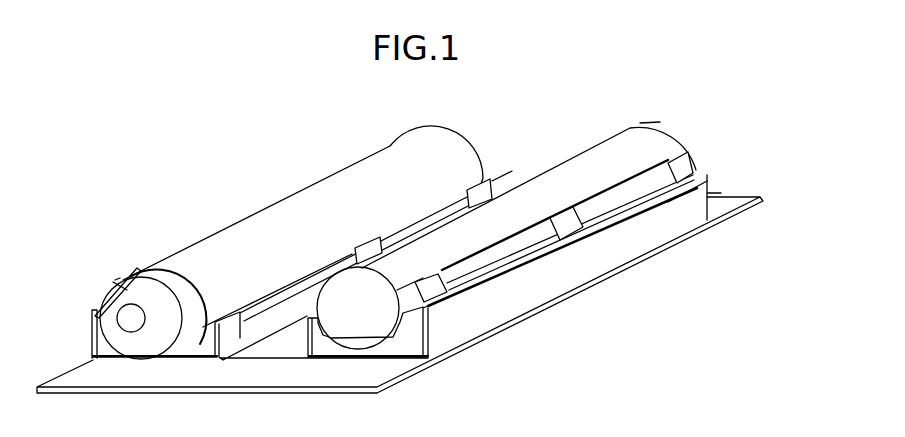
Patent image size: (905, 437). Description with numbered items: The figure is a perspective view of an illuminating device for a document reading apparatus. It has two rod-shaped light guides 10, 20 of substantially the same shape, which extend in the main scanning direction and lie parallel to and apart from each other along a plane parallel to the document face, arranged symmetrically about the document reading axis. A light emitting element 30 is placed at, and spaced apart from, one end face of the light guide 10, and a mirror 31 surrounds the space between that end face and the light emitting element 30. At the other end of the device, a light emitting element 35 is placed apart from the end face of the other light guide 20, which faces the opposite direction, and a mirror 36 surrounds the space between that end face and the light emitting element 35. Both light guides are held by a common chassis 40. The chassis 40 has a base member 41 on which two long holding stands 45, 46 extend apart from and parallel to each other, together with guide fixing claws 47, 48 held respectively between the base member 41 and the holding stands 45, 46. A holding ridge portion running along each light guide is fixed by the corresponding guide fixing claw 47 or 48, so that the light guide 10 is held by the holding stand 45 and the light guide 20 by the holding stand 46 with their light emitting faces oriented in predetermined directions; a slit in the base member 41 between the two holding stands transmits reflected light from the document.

The light guide 10 is at (282, 208).
The light guide 20 is at (580, 157).
The light emitting element 30 is at (127, 317).
The mirror 31 is at (116, 276).
The light emitting element 35 is at (677, 140).
The mirror 36 is at (690, 160).
The chassis 40 is at (560, 326).
The base member 41 is at (573, 278).
The holding stand 45 is at (100, 350).
The holding stand 46 is at (408, 328).
The guide fixing claw 47 is at (118, 284).
The guide fixing claw 48 is at (705, 176).